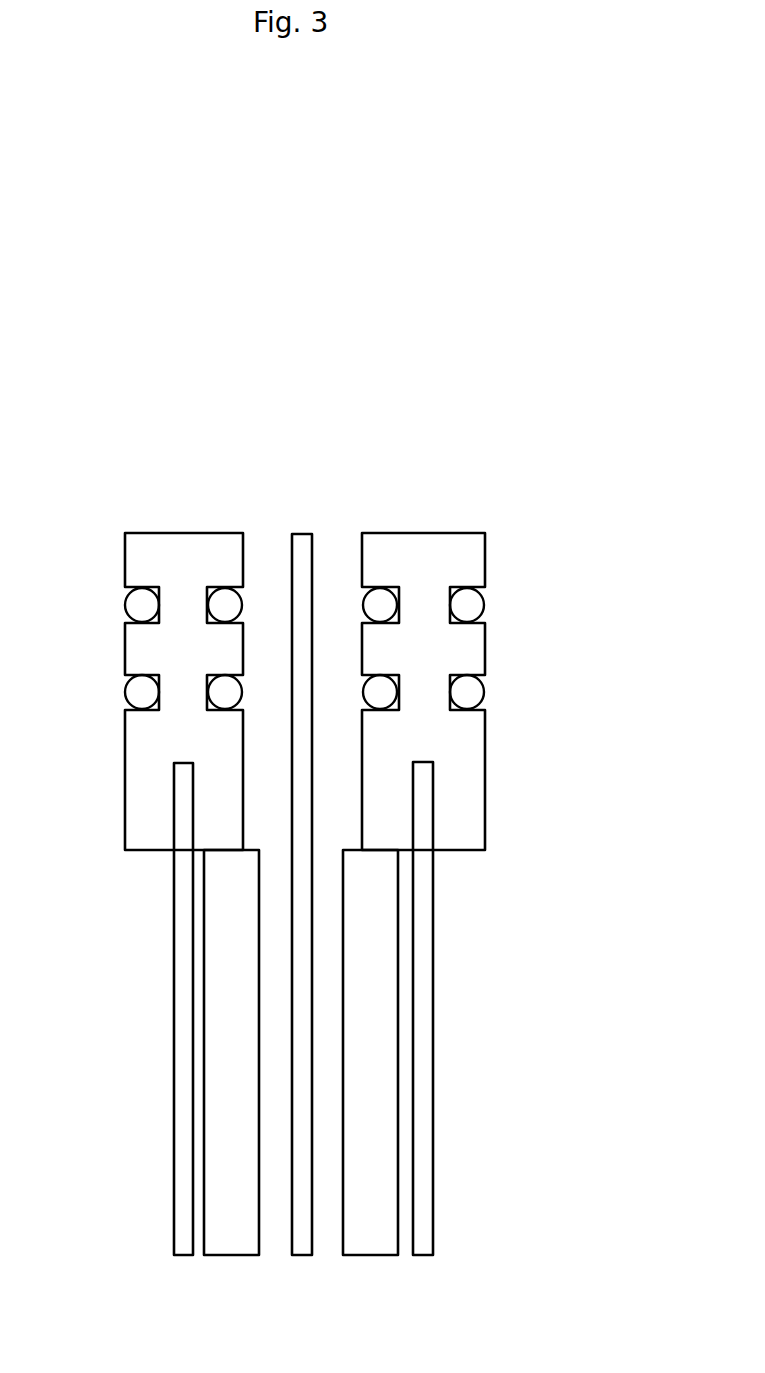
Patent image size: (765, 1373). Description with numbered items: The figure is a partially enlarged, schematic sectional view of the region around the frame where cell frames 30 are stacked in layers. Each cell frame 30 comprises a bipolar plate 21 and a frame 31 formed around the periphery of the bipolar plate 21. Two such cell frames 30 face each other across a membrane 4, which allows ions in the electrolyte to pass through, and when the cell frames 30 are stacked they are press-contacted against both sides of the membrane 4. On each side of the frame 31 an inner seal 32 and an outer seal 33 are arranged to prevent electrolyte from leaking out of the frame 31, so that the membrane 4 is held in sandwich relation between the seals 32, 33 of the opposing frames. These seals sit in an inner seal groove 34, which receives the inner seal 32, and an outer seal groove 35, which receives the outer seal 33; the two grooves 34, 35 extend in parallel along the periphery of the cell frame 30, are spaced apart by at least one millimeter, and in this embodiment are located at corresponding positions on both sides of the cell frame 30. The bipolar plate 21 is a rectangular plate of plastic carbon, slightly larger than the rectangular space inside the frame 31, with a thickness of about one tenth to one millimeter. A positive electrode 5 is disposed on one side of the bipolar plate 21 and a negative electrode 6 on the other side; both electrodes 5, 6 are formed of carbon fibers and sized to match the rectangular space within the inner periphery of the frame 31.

The cell frame 30 is at (483, 902).
The frame 31 is at (415, 540).
The inner seal 32 is at (380, 692).
The outer seal 33 is at (380, 603).
The inner seal groove 34 is at (153, 710).
The outer seal groove 35 is at (155, 621).
The bipolar plate 21 is at (180, 1018).
The membrane 4 is at (297, 1257).
The positive electrode 5 is at (230, 1258).
The negative electrode 6 is at (372, 1257).